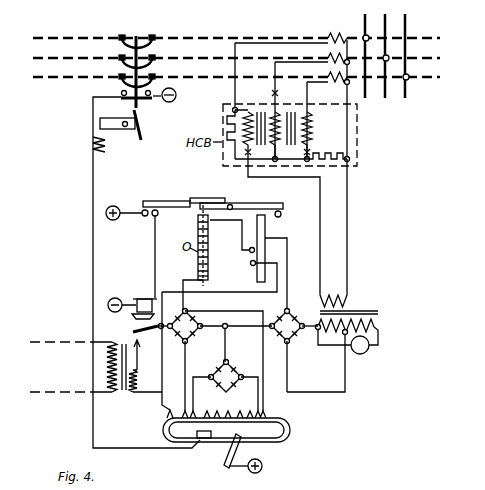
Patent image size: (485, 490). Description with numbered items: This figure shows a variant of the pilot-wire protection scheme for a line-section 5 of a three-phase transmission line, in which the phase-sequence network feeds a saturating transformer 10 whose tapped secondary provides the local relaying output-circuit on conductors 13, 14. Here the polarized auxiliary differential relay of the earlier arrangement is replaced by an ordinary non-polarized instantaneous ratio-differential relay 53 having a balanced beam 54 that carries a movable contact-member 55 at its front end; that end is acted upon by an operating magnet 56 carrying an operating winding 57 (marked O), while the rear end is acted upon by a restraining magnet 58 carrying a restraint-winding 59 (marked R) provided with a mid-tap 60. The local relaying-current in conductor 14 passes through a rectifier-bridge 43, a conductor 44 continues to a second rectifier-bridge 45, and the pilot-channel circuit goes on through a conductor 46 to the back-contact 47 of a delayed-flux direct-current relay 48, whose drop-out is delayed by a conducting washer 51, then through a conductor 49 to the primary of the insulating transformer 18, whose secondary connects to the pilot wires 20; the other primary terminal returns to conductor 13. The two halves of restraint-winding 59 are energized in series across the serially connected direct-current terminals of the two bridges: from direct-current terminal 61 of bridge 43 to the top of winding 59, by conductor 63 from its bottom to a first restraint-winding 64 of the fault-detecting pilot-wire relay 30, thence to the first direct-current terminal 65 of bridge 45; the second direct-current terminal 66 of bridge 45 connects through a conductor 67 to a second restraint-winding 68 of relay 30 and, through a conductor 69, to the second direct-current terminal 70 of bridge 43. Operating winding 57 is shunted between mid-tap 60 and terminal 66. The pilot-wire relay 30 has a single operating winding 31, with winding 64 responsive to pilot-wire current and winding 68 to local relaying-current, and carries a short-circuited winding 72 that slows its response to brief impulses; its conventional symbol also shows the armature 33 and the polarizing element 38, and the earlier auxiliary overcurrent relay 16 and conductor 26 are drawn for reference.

The line-section 5 is at (106, 75).
The saturating transformer 10 is at (368, 310).
The conductor of output-circuit 13 is at (336, 392).
The conductor of output-circuit 14 is at (316, 322).
The auxiliary overcurrent relay 16 is at (360, 345).
The insulating transformer 18 is at (124, 396).
The pilot wires 20 is at (90, 391).
The conductor loop 26 is at (93, 433).
The fault-detecting pilot-wire relay 30 is at (292, 432).
The operating winding 31 is at (212, 416).
The brush arm 33 is at (232, 460).
The rectifier bridge 38 is at (222, 366).
The rectifier-bridge 43 is at (294, 336).
The conductor 44 is at (228, 328).
The rectifier-bridge 45 is at (198, 331).
The conductor 46 is at (152, 330).
The back-contact 47 is at (133, 333).
The delayed-flux direct-current relay 48 is at (141, 297).
The conductor 49 is at (139, 352).
The conducting ring or washer 51 is at (133, 316).
The ratio-differential relay 53 is at (213, 193).
The balanced beam 54 is at (262, 204).
The movable contact-member 55 is at (143, 202).
The operating magnet 56 is at (198, 219).
The operating winding 57 is at (198, 268).
The restraining magnet 58 is at (267, 228).
The restraint-winding 59 is at (255, 265).
The mid-tap 60 is at (250, 251).
The direct-current terminal 61 is at (286, 312).
The conductor 63 is at (233, 291).
The first restraint-winding 64 is at (168, 418).
The first direct-current terminal 65 is at (181, 345).
The second direct-current terminal 66 is at (186, 311).
The conductor 67 is at (235, 351).
The second restraint-winding 68 is at (283, 412).
The conductor 69 is at (239, 391).
The second direct-current terminal 70 is at (288, 346).
The short-circuited winding 72 is at (192, 448).